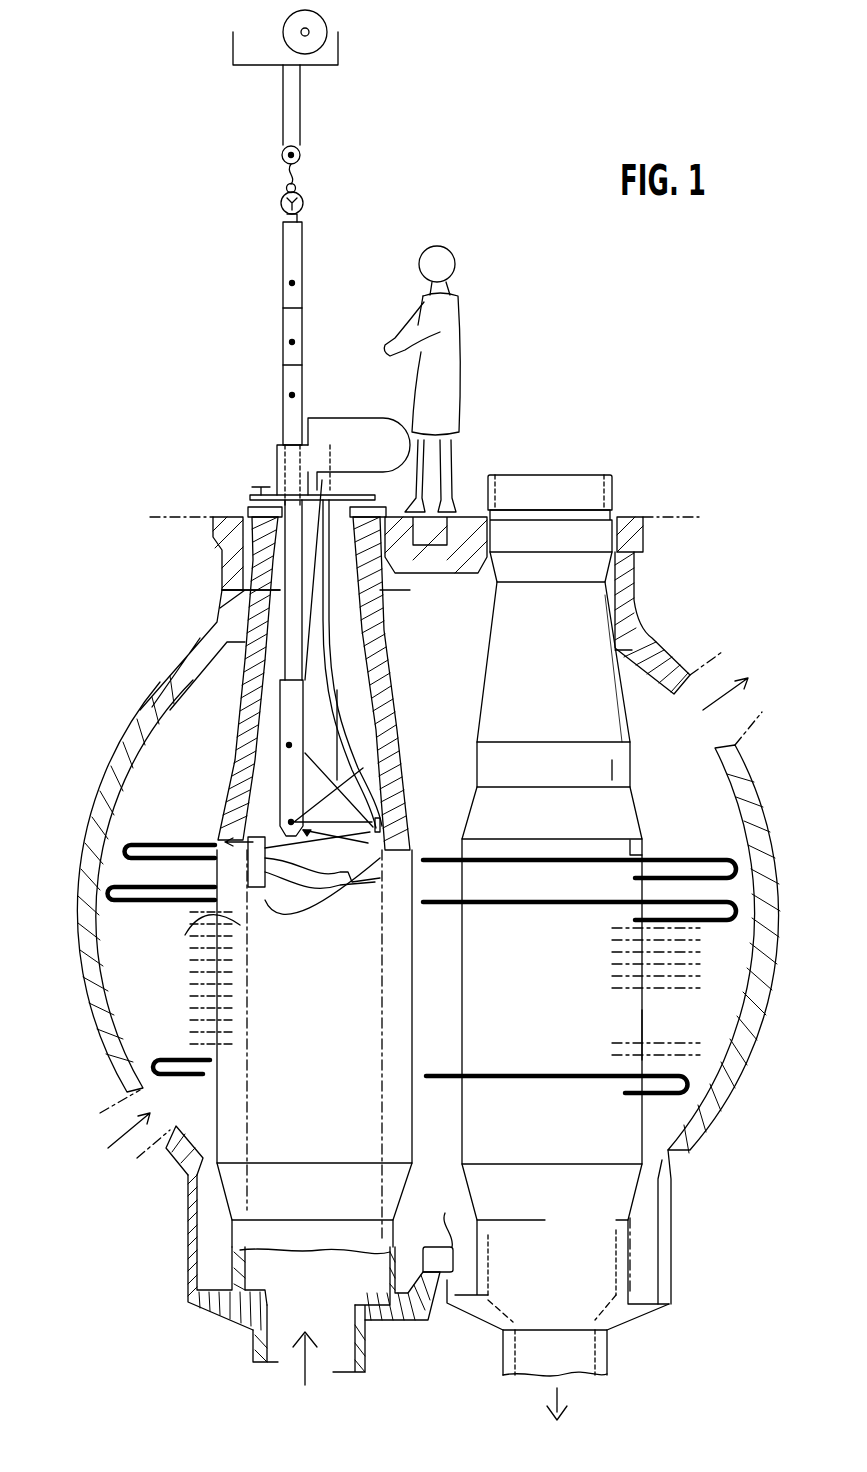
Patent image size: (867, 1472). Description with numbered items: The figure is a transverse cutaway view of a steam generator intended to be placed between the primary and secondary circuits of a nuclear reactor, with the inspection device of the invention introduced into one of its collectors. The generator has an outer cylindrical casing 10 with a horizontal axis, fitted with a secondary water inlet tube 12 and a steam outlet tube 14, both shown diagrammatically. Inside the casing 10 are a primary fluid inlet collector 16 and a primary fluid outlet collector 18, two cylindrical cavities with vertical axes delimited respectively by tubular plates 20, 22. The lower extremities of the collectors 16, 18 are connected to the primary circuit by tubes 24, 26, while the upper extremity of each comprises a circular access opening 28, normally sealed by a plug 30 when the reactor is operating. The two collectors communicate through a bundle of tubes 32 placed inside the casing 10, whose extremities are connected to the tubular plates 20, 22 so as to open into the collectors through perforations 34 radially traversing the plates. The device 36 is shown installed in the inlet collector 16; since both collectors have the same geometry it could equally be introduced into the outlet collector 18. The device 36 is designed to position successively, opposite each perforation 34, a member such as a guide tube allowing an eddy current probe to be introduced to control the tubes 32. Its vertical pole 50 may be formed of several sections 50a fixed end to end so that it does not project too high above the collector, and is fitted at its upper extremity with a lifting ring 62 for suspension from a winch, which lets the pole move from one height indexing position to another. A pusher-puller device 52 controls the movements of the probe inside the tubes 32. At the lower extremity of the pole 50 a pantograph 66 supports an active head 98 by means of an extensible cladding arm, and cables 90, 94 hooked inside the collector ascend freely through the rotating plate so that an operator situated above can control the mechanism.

The outer cylindrical casing 10 is at (757, 835).
The secondary water inlet tube 12 is at (110, 1104).
The steam outlet tube 14 is at (690, 672).
The primary fluid inlet collector 16 is at (320, 1252).
The primary fluid outlet collector 18 is at (640, 1310).
The tubular plate 20 is at (314, 1048).
The tubular plate 22 is at (630, 1020).
The tube 24 is at (250, 1352).
The tube 26 is at (607, 1355).
The circular access opening 28 is at (232, 553).
The plug 30 is at (575, 481).
The bundle of tubes 32 is at (150, 840).
The perforations 34 is at (215, 925).
The device of the invention 36 is at (343, 289).
The vertical pole 50 is at (269, 276).
The sections 50a is at (285, 383).
The pusher-puller device 52 is at (375, 425).
The lifting ring 62 is at (283, 204).
The pantograph 66 is at (354, 786).
The cable 90 is at (345, 740).
The cable 94 is at (262, 590).
The active head 98 is at (265, 897).